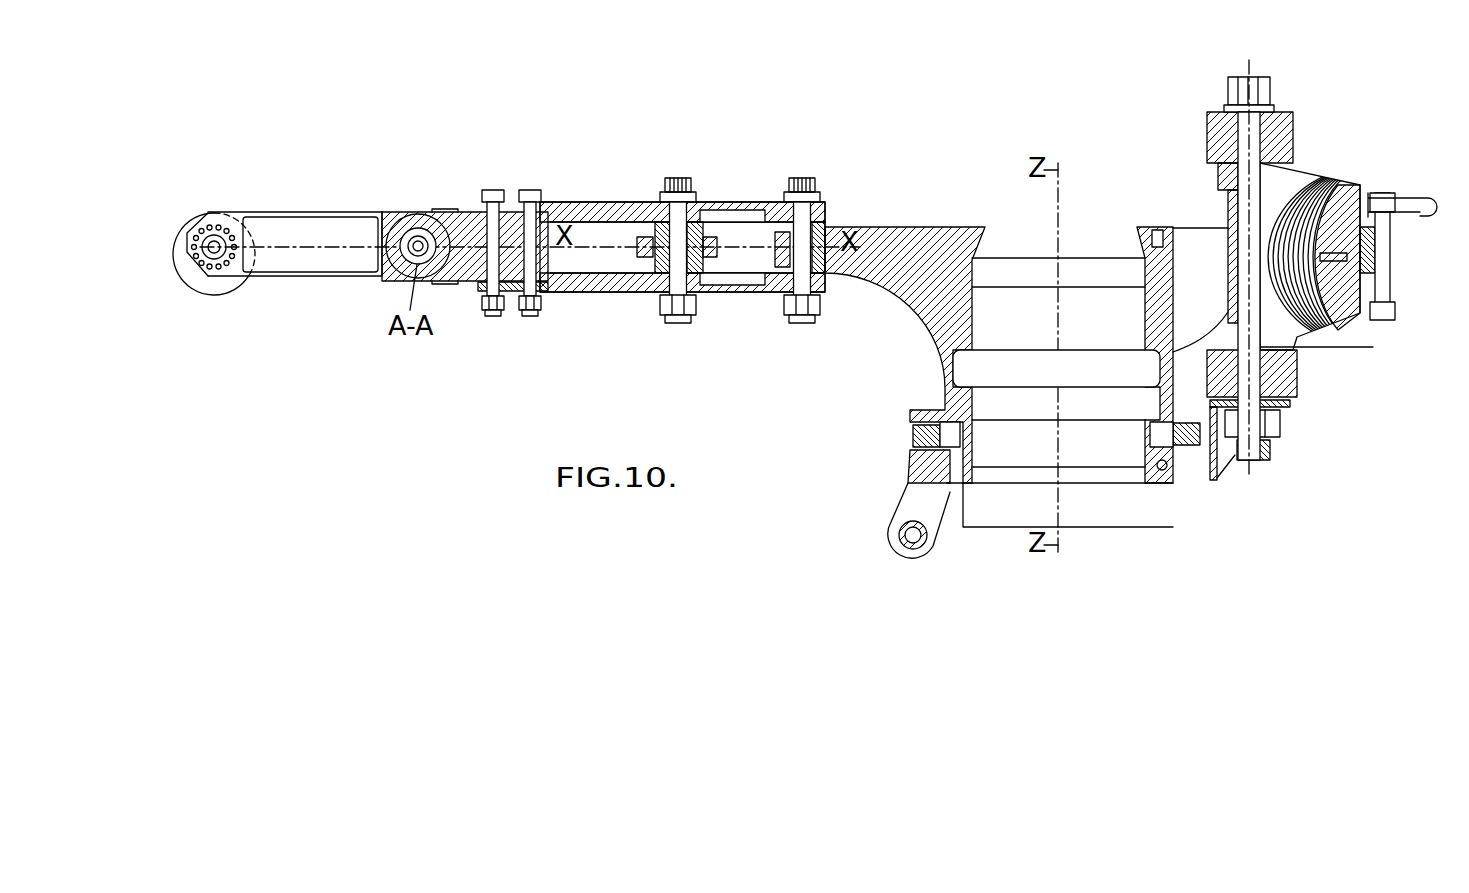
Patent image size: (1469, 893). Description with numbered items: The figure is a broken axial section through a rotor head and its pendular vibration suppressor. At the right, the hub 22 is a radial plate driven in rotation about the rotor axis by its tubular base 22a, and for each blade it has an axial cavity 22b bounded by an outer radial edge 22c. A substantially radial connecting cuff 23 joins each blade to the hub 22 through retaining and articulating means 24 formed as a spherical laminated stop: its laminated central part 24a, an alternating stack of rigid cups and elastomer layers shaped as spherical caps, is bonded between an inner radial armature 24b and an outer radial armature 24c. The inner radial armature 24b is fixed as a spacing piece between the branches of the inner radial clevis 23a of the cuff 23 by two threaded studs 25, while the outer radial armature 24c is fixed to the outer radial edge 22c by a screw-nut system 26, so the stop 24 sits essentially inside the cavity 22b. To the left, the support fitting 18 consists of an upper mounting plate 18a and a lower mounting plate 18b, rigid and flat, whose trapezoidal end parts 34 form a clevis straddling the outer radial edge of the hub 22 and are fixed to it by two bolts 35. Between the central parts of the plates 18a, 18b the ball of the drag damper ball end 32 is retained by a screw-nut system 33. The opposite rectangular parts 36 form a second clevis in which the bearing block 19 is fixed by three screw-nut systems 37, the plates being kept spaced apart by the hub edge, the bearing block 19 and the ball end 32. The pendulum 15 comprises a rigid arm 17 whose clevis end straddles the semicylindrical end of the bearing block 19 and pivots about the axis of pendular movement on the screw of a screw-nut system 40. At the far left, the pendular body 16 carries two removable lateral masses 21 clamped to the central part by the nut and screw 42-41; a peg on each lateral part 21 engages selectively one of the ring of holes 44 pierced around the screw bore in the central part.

The vertical pendulum 15 is at (287, 292).
The pendular body 16 is at (203, 300).
The rigid arm 17 is at (310, 205).
The support fitting 18 is at (585, 200).
The upper mounting plate 18a is at (630, 210).
The lower mounting plate 18b is at (590, 280).
The bearing block 19 is at (455, 293).
The lateral part 21 is at (195, 280).
The hub 22 is at (920, 240).
The tubular base 22a is at (915, 468).
The axial cavity 22b is at (1210, 252).
The outer radial edge 22c is at (1370, 255).
The connecting cuff 23 is at (1355, 348).
The inner radial clevis 23a is at (1218, 130).
The retaining and articulating means 24 is at (1320, 332).
The laminated central part 24a is at (1312, 210).
The inner radial armature 24b is at (1226, 172).
The outer radial armature 24c is at (1365, 225).
The threaded stud 25 is at (1258, 115).
The screw-nut system 26 is at (1388, 285).
The ball end 32 is at (700, 275).
The screw-nut system 33 is at (686, 182).
The trapezoidal end part 34 is at (775, 208).
The bolt 35 is at (808, 300).
The rectangular part 36 is at (506, 312).
The screw-nut system 37 is at (528, 222).
The screw-nut system 40 is at (405, 222).
The nut and screw 42-41 is at (220, 258).
The holes 44 is at (226, 229).